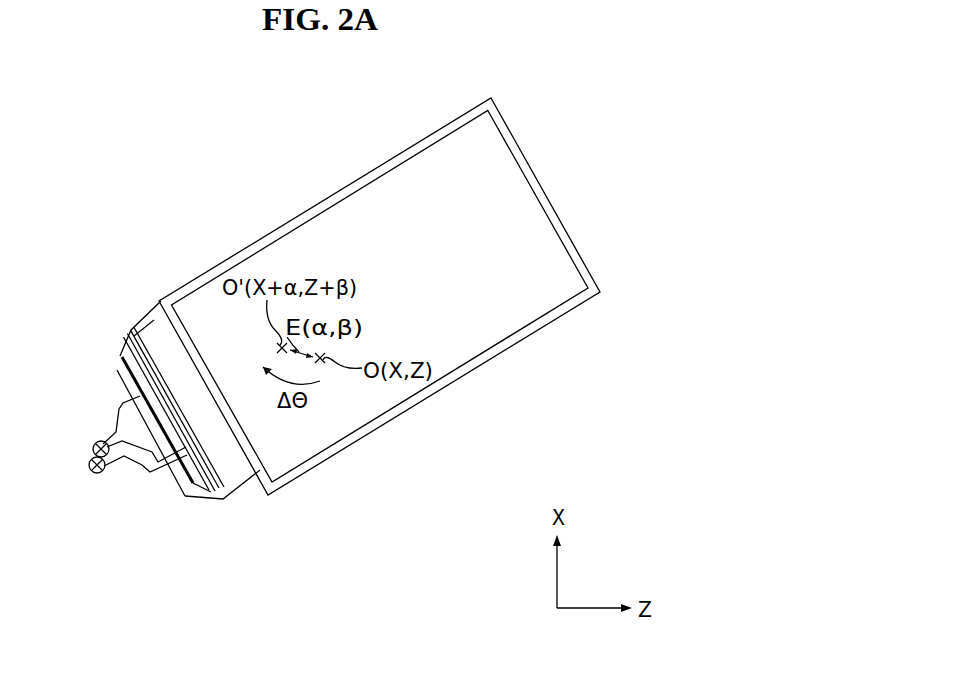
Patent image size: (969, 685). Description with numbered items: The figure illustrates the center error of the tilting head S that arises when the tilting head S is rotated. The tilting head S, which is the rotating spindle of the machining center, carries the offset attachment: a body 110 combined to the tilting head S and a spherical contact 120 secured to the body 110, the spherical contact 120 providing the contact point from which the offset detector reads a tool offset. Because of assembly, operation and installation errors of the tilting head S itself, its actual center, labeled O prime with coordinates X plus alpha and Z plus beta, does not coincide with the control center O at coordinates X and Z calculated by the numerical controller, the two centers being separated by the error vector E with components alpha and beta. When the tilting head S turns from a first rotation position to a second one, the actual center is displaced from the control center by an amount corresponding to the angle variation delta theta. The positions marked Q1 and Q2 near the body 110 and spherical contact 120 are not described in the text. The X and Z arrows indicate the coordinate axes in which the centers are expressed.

The body 110 is at (146, 328).
The spherical contact 120 is at (134, 462).
The tilting head S is at (527, 210).
The first screw Q1 is at (91, 470).
The second screw Q2 is at (93, 450).